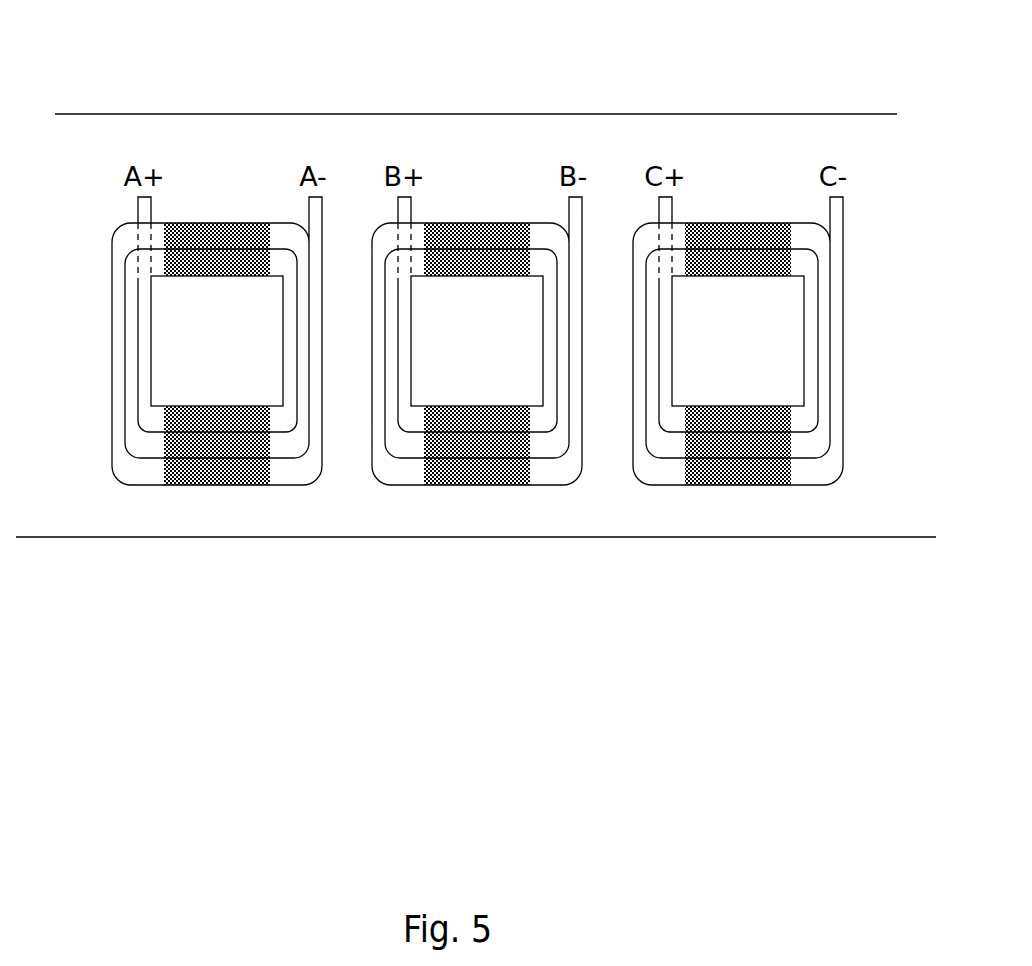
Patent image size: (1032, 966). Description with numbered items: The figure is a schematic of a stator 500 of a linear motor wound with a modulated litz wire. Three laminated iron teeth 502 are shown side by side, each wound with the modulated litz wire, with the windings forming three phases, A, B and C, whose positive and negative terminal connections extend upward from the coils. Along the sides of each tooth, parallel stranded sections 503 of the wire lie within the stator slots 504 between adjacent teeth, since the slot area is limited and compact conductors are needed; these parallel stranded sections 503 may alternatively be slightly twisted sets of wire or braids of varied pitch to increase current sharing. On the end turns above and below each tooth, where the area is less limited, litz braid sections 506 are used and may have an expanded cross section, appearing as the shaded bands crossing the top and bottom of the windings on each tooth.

The stator 500 is at (423, 132).
The laminated iron teeth 502 is at (477, 341).
The parallel stranded sections 503 is at (577, 367).
The stator slots 504 is at (608, 490).
The litz braid sections 506 is at (190, 419).